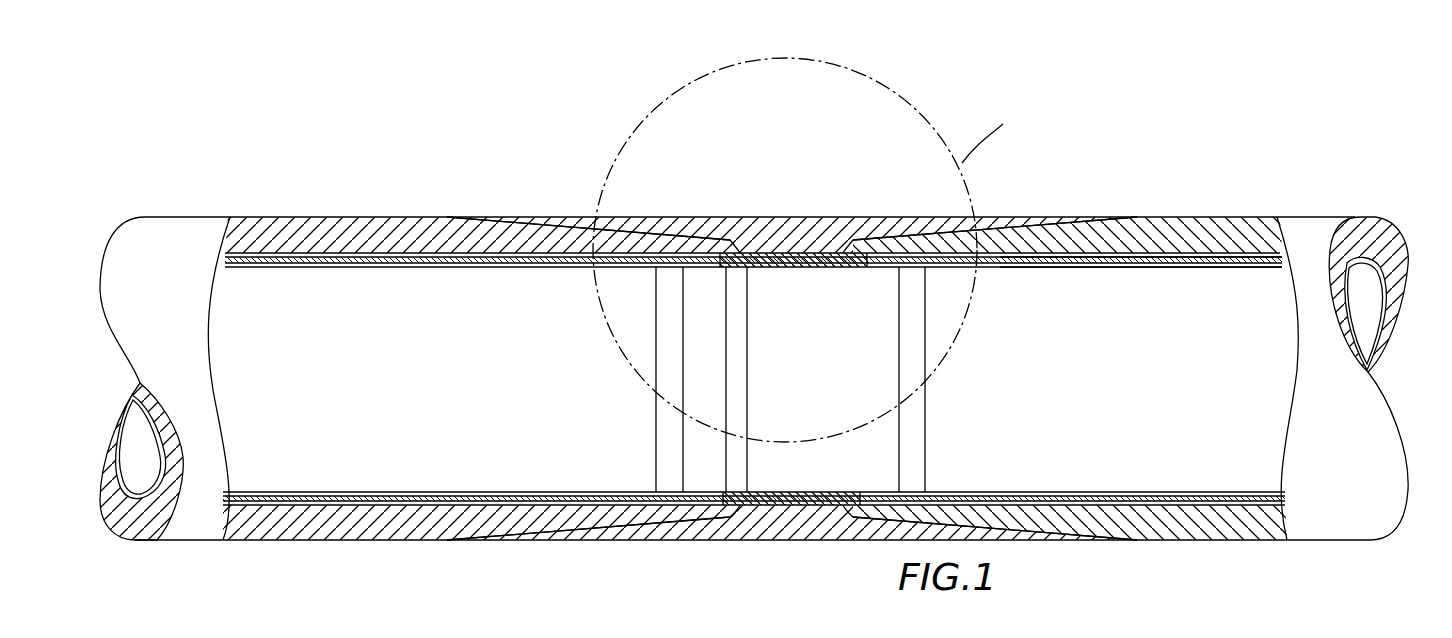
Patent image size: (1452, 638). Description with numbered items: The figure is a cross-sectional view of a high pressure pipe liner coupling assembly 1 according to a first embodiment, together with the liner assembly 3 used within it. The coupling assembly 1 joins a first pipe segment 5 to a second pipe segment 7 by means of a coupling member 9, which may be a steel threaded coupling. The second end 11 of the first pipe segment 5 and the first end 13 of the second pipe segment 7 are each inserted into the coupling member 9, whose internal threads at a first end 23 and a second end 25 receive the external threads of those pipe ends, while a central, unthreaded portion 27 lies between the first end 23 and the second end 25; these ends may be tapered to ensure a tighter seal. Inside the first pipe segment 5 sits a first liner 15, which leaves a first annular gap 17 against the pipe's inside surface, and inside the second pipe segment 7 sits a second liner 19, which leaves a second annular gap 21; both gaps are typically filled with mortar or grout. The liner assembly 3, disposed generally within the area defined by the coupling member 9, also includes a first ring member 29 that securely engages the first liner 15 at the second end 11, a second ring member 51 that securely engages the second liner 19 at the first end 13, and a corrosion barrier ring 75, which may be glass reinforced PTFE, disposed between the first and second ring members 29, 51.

The coupling assembly 1 is at (1085, 86).
The liner assembly 3 is at (996, 302).
The first pipe segment 5 is at (291, 217).
The second pipe segment 7 is at (1153, 217).
The coupling member 9 is at (640, 217).
The second end of first pipe segment 11 is at (735, 238).
The first end of second pipe segment 13 is at (853, 241).
The first liner 15 is at (350, 264).
The first annular gap 17 is at (400, 252).
The second liner 19 is at (1200, 252).
The second annular gap 21 is at (1256, 254).
The first end of coupling member 23 is at (458, 536).
The second end of coupling member 25 is at (1120, 536).
The central unthreaded portion 27 is at (813, 505).
The first ring member 29 is at (664, 506).
The second ring member 51 is at (845, 492).
The corrosion barrier ring 75 is at (742, 507).